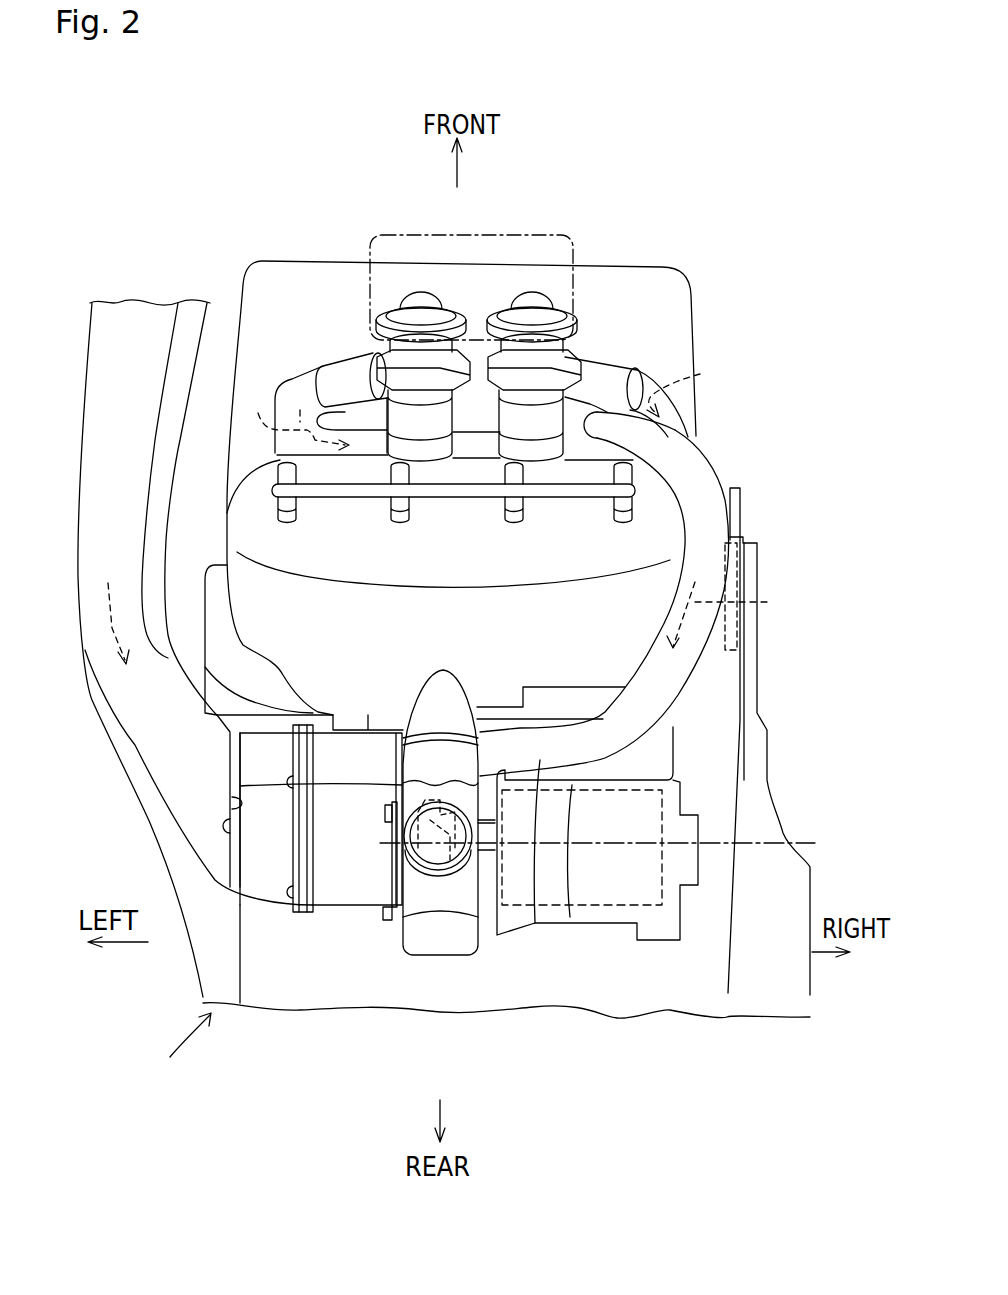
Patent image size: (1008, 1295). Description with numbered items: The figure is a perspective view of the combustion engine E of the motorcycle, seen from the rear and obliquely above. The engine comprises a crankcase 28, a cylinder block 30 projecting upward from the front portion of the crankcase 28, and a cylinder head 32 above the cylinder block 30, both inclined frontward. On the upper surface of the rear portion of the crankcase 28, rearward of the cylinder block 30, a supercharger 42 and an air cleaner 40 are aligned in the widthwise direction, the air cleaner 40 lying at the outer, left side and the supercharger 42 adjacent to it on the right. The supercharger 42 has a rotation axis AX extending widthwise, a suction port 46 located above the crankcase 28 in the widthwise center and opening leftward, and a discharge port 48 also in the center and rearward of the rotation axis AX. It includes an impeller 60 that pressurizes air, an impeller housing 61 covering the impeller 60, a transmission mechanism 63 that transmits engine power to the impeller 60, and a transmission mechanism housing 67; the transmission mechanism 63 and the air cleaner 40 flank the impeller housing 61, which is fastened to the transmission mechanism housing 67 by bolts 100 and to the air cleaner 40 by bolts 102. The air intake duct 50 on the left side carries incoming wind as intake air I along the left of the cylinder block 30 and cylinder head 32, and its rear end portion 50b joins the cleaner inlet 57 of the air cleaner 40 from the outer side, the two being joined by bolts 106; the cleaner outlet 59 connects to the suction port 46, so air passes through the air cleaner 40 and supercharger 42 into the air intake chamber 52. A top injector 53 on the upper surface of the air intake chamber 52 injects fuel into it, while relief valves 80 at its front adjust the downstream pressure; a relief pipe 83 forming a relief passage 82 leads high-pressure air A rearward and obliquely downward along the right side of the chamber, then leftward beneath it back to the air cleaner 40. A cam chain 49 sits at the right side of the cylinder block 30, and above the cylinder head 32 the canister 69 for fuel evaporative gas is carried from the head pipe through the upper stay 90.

The crankcase 28 is at (687, 997).
The cylinder block 30 is at (217, 588).
The cylinder head 32 is at (292, 297).
The air cleaner 40 is at (328, 925).
The supercharger 42 is at (447, 978).
The suction port 46 is at (390, 830).
The discharge port 48 is at (440, 840).
The cam chain 49 is at (747, 573).
The air intake duct 50 is at (153, 315).
The rear end portion of the air intake duct 50b is at (230, 800).
The air intake chamber 52 is at (267, 533).
The top injector 53 is at (280, 467).
The cleaner inlet 57 is at (225, 852).
The cleaner outlet 59 is at (283, 782).
The impeller 60 is at (470, 890).
The impeller housing 61 is at (415, 947).
The transmission mechanism 63 is at (618, 907).
The transmission mechanism housing 67 is at (592, 917).
The canister 69 is at (575, 254).
The relief valves 80 is at (536, 298).
The relief passage 82 is at (680, 457).
The relief pipe 83 is at (722, 468).
The upper stay 90 is at (205, 667).
The bolts 100 is at (392, 907).
The bolts 102 is at (385, 815).
The bolts 106 is at (223, 826).
The high-pressure air A is at (521, 503).
The rotation axis AX is at (755, 843).
The combustion engine E is at (180, 1047).
The intake air I is at (112, 628).